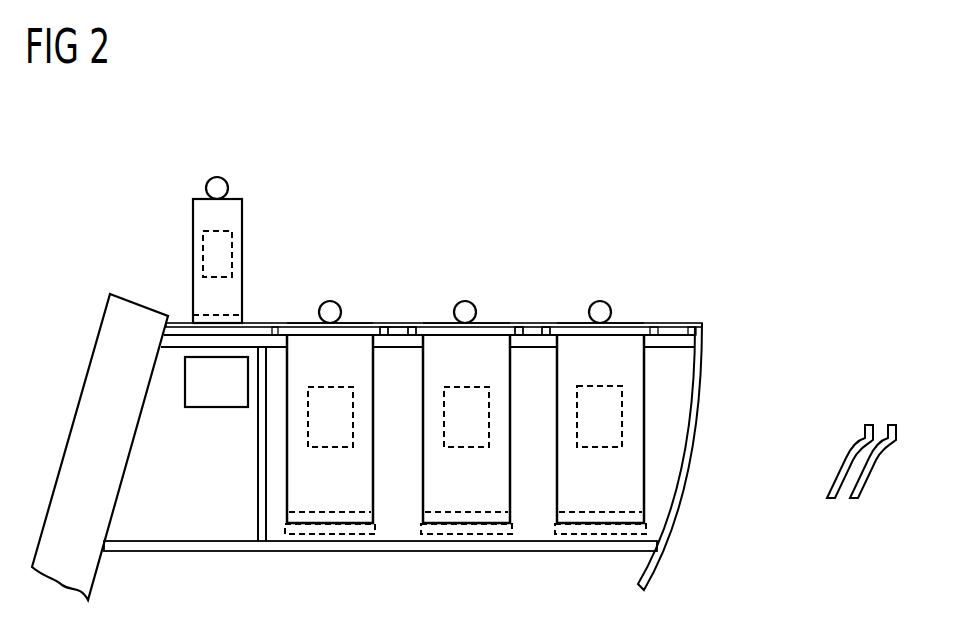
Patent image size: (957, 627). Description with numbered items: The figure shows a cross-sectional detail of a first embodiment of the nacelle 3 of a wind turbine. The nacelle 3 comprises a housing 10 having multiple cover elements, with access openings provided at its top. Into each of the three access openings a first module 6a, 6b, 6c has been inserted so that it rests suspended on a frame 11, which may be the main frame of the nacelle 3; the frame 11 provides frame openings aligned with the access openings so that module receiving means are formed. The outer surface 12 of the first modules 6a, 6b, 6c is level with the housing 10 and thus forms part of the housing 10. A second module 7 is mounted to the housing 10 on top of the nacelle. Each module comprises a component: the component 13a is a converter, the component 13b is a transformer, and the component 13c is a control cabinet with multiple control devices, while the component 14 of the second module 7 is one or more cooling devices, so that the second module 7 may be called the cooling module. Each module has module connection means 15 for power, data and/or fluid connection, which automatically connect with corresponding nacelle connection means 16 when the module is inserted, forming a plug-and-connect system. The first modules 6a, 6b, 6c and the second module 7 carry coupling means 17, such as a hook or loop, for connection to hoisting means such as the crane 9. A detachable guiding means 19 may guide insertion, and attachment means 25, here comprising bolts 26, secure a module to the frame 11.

The nacelle 3 is at (697, 238).
The first module 6a is at (294, 489).
The first module 6b is at (430, 489).
The first module 6c is at (564, 489).
The second module 7 is at (232, 213).
The crane 9 is at (207, 400).
The housing 10 is at (688, 445).
The frame 11 is at (258, 497).
The outer surface 12 is at (358, 323).
The component 13a is at (330, 437).
The component 13b is at (466, 437).
The component 13c is at (599, 437).
The component 14 is at (232, 252).
The module connection means 15 is at (223, 317).
The nacelle connection means 16 is at (347, 528).
The coupling means 17 is at (217, 176).
The detachable guiding means 19 is at (843, 442).
The attachment means 25 is at (405, 316).
The bolts 26 is at (428, 323).